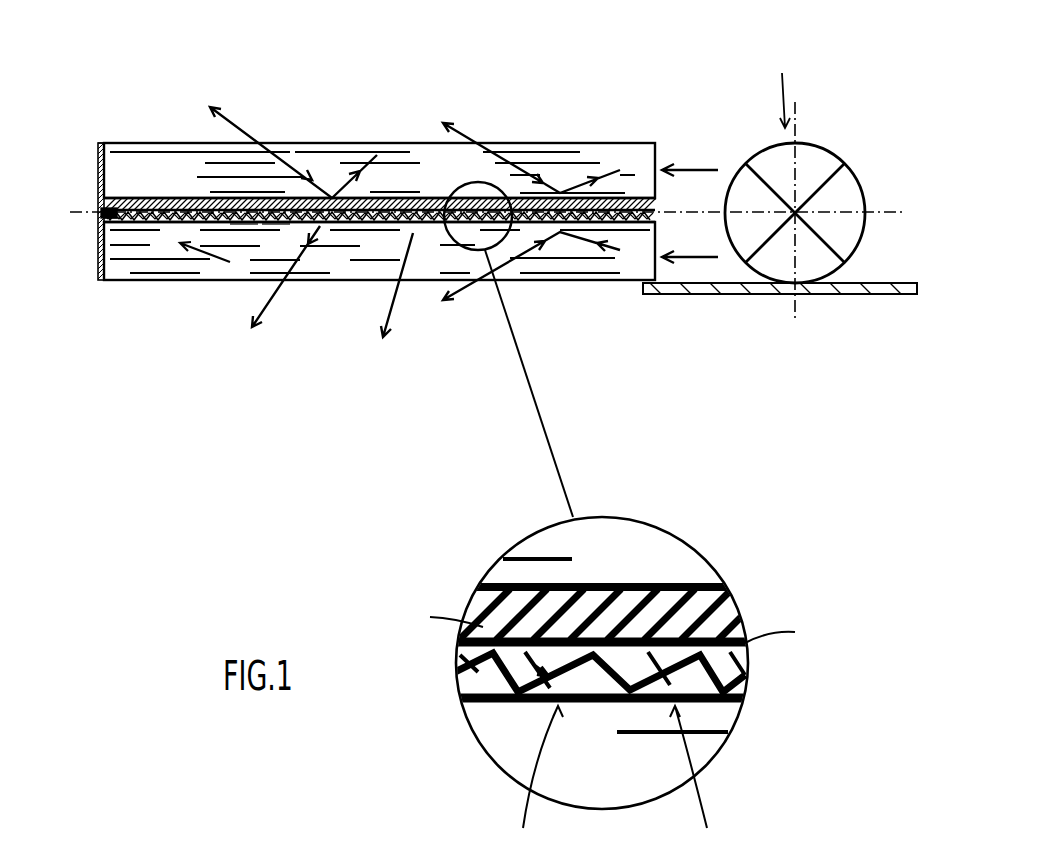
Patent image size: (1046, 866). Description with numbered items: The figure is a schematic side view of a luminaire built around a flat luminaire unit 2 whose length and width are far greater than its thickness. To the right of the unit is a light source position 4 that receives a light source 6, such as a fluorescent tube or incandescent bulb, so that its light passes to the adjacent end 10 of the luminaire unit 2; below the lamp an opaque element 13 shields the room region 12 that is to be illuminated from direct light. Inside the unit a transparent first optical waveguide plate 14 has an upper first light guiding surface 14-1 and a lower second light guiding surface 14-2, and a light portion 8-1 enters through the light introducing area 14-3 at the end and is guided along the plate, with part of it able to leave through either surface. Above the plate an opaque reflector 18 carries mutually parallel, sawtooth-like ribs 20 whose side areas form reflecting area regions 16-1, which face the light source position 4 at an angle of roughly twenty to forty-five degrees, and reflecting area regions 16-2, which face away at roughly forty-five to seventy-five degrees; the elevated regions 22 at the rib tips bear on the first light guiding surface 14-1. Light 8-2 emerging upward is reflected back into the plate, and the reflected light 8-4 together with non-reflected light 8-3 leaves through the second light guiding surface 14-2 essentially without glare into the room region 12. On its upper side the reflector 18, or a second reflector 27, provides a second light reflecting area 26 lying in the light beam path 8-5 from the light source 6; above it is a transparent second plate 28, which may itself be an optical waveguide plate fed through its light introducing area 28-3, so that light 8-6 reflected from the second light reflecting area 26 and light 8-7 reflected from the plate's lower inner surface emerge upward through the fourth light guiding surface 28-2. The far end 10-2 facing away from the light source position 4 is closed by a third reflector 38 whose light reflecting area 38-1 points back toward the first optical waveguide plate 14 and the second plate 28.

The luminaire unit 2 is at (175, 77).
The light source position 4 is at (781, 87).
The light source 6 is at (828, 150).
The light portion 8-1 is at (705, 258).
The light emerging from the first light guiding surface 8-2 is at (330, 230).
The non-reflected light 8-3 is at (478, 296).
The reflected light 8-4 is at (280, 310).
The light beam path 8-5 is at (692, 168).
The light beam path arrows 8-6 is at (260, 130).
The light reflected from the inner side of the third optical waveguide surface 8-7 is at (483, 148).
The end of the luminaire unit 10 is at (658, 166).
The end facing away from the light source position 10-2 is at (102, 143).
The room region 12 is at (412, 469).
The opaque element 13 is at (843, 295).
The first optical waveguide plate 14 is at (147, 267).
The first light guiding surface 14-1 is at (112, 278).
The second light guiding surface 14-2 is at (190, 280).
The light introducing area 14-3 is at (653, 288).
The reflecting area regions facing the light source position 16-1 is at (262, 224).
The reflecting area regions facing away from the light source position 16-2 is at (250, 224).
The opaque reflector 18 is at (97, 220).
The ribs 20 is at (340, 252).
The elevated regions 22 is at (367, 223).
The second light reflecting area 26 is at (177, 197).
The second reflector 27 is at (98, 208).
The second plate 28 is at (325, 153).
The fourth light guiding surface 28-2 is at (593, 124).
The light introducing area of the second plate 28-3 is at (660, 166).
The third reflector 38 is at (97, 148).
The light reflecting area of the third reflector 38-1 is at (132, 166).